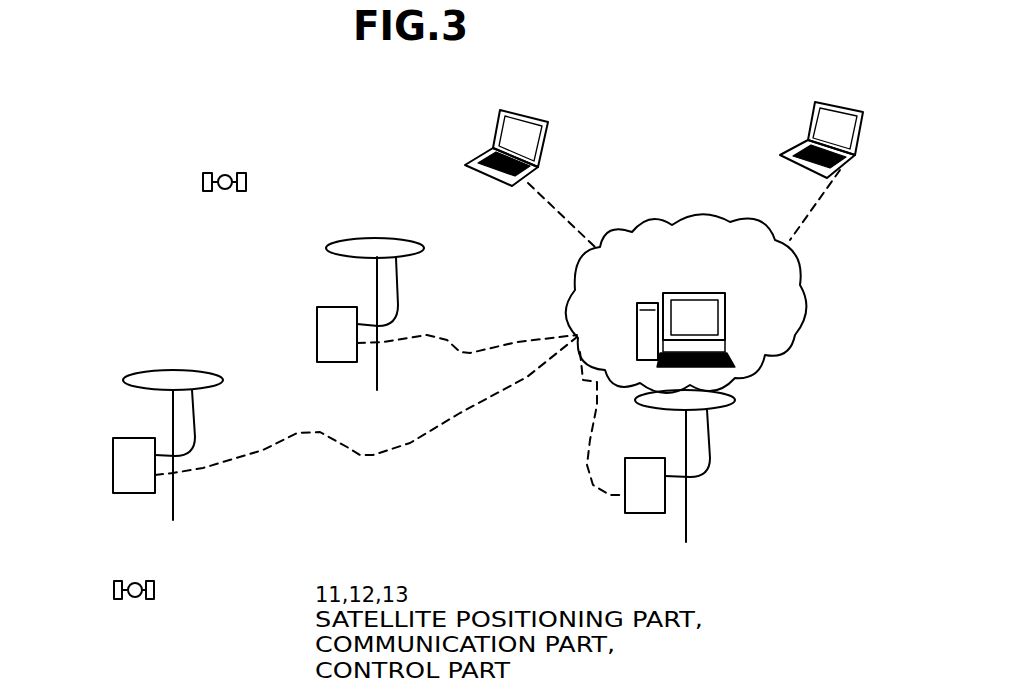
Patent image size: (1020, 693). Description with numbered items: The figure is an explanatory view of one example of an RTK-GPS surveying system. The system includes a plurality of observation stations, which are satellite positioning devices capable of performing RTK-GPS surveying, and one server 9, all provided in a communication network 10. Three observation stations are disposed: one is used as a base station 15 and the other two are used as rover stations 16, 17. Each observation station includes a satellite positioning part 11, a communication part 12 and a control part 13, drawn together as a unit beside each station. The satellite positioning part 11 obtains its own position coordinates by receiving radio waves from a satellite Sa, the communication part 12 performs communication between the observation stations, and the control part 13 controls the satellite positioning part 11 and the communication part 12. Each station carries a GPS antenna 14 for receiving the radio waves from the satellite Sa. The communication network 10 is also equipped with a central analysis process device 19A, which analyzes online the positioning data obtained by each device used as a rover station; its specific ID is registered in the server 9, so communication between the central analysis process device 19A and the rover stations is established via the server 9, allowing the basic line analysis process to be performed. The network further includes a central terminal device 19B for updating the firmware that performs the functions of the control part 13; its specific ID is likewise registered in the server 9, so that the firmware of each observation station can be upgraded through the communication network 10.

The server 9 is at (723, 345).
The communication network 10 is at (626, 242).
The satellite positioning part 11 is at (362, 438).
The communication part 12 is at (362, 438).
The control part 13 is at (340, 352).
The GPS antenna 14 is at (378, 242).
The base station 15 is at (723, 477).
The rover station 16 is at (308, 293).
The rover station 17 is at (103, 423).
The central analysis process device 19A is at (532, 112).
The central terminal device 19B is at (828, 101).
The satellite Sa is at (230, 168).